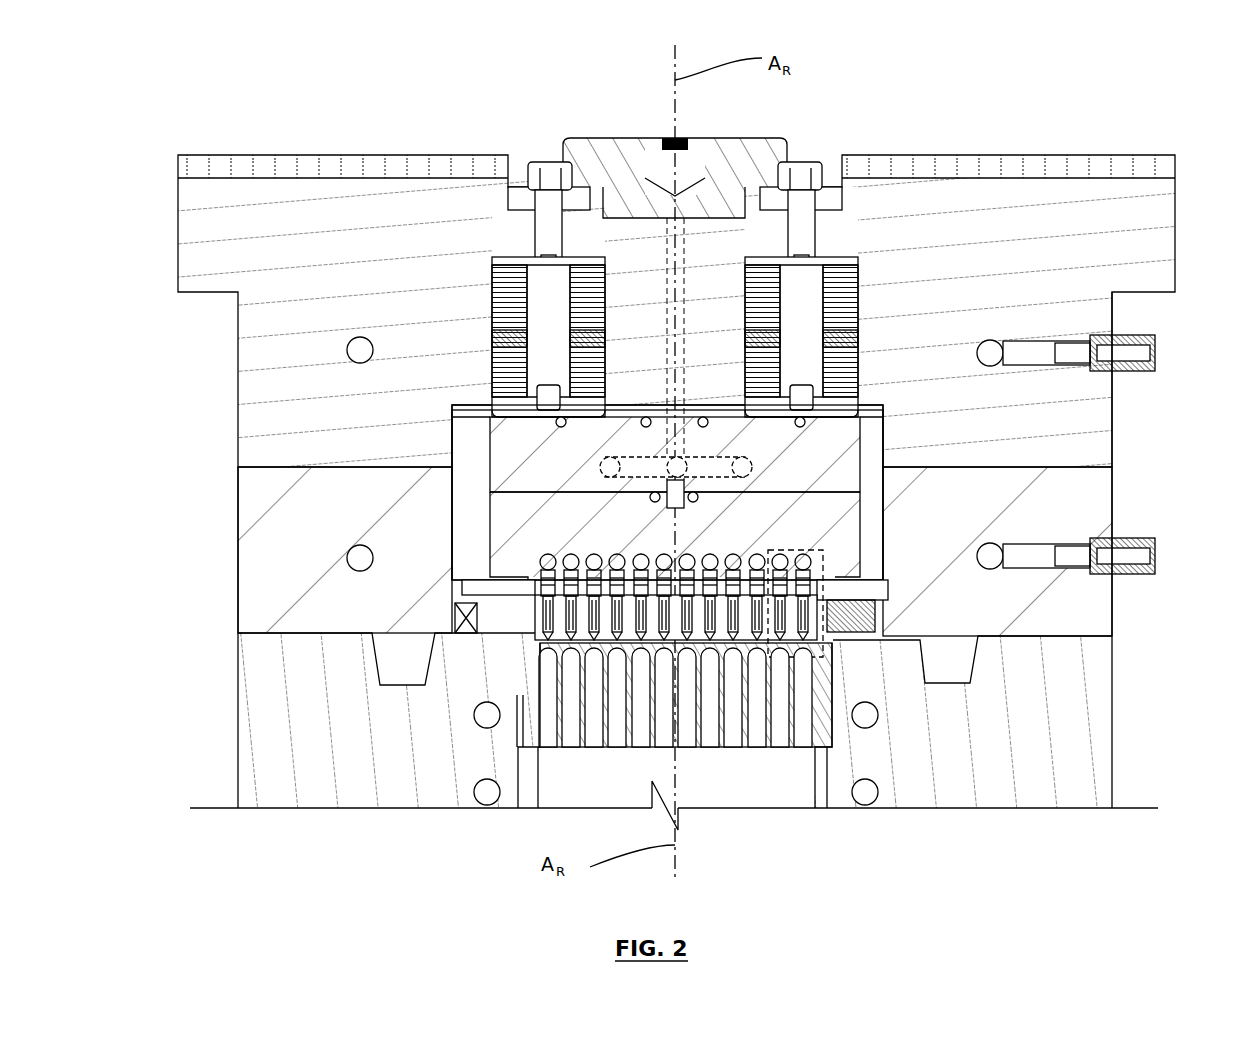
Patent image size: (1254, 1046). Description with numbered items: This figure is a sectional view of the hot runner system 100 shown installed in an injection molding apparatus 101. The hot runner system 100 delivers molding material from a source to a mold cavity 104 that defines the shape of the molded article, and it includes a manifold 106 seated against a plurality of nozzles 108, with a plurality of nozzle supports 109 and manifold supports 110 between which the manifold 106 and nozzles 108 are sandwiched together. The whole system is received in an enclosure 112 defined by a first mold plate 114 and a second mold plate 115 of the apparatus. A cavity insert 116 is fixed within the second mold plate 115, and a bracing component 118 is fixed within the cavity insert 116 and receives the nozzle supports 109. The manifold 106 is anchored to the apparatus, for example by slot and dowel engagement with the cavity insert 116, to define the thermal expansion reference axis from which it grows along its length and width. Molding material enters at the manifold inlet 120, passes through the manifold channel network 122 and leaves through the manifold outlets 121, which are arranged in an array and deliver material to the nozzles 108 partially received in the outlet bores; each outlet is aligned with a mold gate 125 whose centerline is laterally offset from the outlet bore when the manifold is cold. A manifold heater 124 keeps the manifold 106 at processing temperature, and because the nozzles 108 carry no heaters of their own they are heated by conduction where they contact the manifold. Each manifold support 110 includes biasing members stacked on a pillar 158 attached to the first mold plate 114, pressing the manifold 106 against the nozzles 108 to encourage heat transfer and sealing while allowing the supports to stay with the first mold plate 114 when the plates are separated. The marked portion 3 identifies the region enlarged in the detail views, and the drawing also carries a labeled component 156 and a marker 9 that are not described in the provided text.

The injection molding apparatus 101 is at (130, 150).
The first mold plate 114 is at (238, 358).
The second mold plate 115 is at (240, 480).
The manifold 106 is at (483, 478).
The enclosure 112 is at (455, 538).
The nozzle 108 is at (531, 594).
The nozzle support 109 is at (531, 608).
The mold cavity 104 is at (540, 713).
The hot runner system 100 is at (470, 397).
The pillar 158 is at (858, 252).
The manifold support 110 is at (866, 284).
The coil spring 156 is at (858, 333).
The manifold heater 124 is at (865, 397).
The manifold inlet 120 is at (687, 427).
The manifold channel network 122 is at (710, 465).
The portion 3 is at (825, 567).
The manifold outlet 121 is at (827, 570).
The bracing component 118 is at (1087, 637).
The cavity insert 116 is at (835, 682).
The mold gate 125 is at (708, 645).
The section line 9 is at (548, 572).